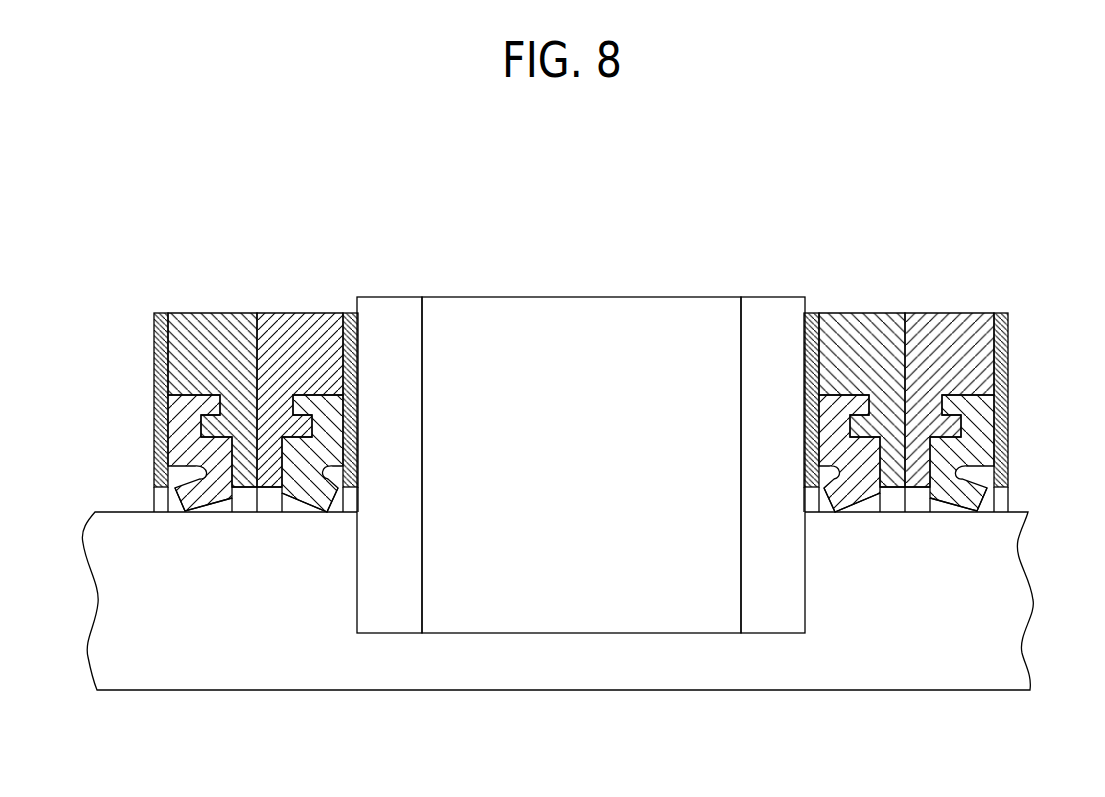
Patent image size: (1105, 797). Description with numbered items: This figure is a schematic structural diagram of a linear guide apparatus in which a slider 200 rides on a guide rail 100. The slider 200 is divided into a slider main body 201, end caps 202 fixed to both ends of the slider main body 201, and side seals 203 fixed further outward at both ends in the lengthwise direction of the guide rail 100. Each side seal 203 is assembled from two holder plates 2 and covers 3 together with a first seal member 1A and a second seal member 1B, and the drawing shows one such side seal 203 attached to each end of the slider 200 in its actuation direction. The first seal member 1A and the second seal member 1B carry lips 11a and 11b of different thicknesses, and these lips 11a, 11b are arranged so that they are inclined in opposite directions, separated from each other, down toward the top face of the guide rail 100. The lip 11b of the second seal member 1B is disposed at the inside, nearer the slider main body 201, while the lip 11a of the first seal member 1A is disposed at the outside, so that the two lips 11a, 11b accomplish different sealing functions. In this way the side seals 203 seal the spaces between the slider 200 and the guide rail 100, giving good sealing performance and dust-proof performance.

The guide rail 100 is at (106, 505).
The slider 200 is at (581, 415).
The slider main body 201 is at (577, 307).
The end cap 202 is at (389, 307).
The side seal 203 is at (583, 395).
The holder plate 2 is at (199, 328).
The first seal member 1A is at (581, 412).
The second seal member 1B is at (581, 412).
The cover 3 is at (154, 340).
The lip of first seal member 11a is at (193, 493).
The lip of second seal member 11b is at (320, 493).